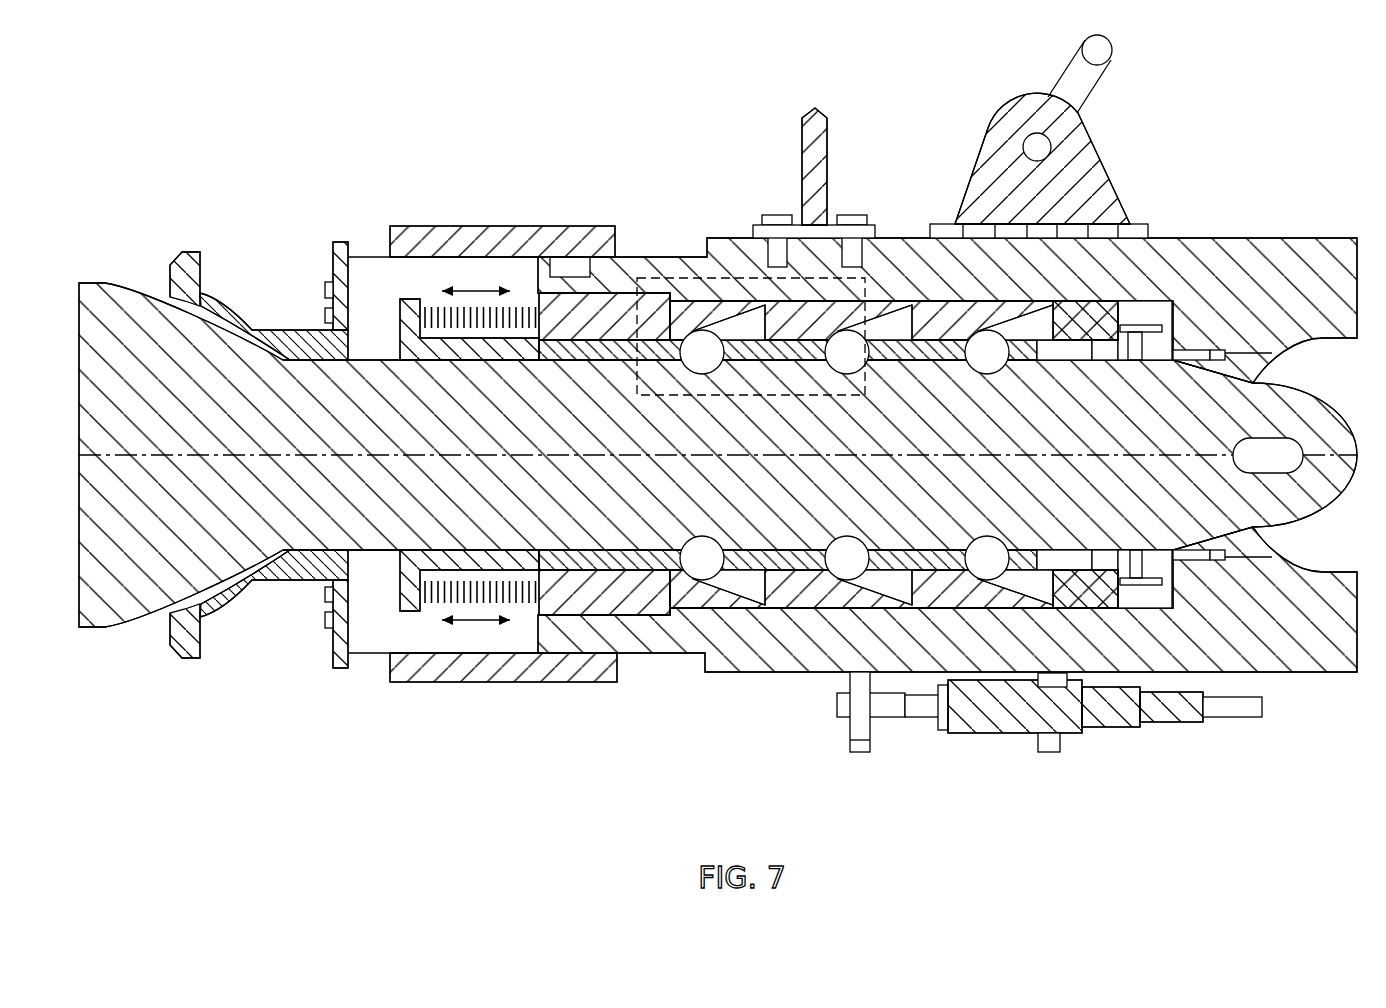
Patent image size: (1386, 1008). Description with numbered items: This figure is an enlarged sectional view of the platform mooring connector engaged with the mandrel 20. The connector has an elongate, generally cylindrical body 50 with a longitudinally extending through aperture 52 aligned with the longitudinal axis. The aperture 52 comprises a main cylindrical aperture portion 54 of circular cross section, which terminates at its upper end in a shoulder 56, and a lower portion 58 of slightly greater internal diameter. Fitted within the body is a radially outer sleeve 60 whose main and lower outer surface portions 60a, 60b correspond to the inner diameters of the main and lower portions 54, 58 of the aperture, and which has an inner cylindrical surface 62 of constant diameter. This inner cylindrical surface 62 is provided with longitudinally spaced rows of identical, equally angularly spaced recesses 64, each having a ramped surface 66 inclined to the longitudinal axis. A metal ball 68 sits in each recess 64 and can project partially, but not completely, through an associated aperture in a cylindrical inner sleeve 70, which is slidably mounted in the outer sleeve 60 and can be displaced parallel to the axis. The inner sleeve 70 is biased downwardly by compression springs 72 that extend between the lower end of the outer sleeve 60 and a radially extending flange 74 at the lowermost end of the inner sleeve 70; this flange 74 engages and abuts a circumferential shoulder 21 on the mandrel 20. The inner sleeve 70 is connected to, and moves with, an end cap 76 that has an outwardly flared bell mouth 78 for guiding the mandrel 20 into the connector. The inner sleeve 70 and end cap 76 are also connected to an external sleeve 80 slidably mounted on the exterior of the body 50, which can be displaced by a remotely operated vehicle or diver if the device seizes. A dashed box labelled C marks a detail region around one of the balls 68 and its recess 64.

The mandrel 20 is at (559, 433).
The circumferential shoulder 21 is at (401, 551).
The body 50 is at (1200, 238).
The through aperture 52 is at (1055, 317).
The main cylindrical aperture portion 54 is at (890, 300).
The shoulder 56 is at (670, 615).
The lower portion 58 is at (616, 601).
The outer sleeve 60 is at (576, 546).
The main outer surface portion 60a is at (713, 297).
The lower outer surface portion 60b is at (593, 307).
The inner cylindrical surface 62 is at (628, 549).
The recess 64 is at (741, 326).
The ramped surface 66 is at (725, 588).
The metal ball 68 is at (697, 342).
The inner sleeve 70 is at (570, 350).
The compression spring 72 is at (435, 312).
The flange 74 is at (415, 606).
The end cap 76 is at (333, 250).
The bell mouth 78 is at (196, 637).
The external sleeve 80 is at (587, 683).
The detail region C is at (863, 378).